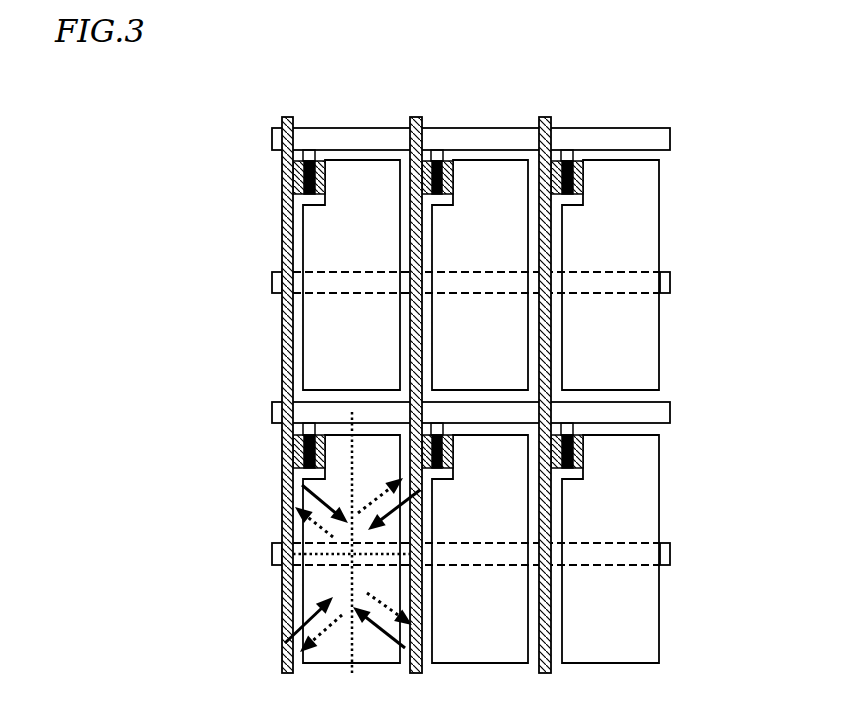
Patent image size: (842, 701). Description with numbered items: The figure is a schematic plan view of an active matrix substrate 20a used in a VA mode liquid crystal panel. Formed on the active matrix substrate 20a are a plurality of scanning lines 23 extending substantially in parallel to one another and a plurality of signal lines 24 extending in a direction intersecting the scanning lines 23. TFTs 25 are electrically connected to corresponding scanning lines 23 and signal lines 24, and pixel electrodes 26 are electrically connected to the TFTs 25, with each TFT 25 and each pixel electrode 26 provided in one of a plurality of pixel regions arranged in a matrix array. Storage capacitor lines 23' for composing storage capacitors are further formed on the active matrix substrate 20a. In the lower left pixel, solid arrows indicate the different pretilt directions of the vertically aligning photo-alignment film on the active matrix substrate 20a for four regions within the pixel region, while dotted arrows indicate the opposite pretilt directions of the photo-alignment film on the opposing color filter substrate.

The active matrix substrate 20a is at (628, 80).
The scanning line 23 is at (397, 275).
The storage capacitor line 23' is at (521, 418).
The signal line 24 is at (281, 325).
The TFT 25 is at (583, 176).
The pixel electrode 26 is at (623, 232).